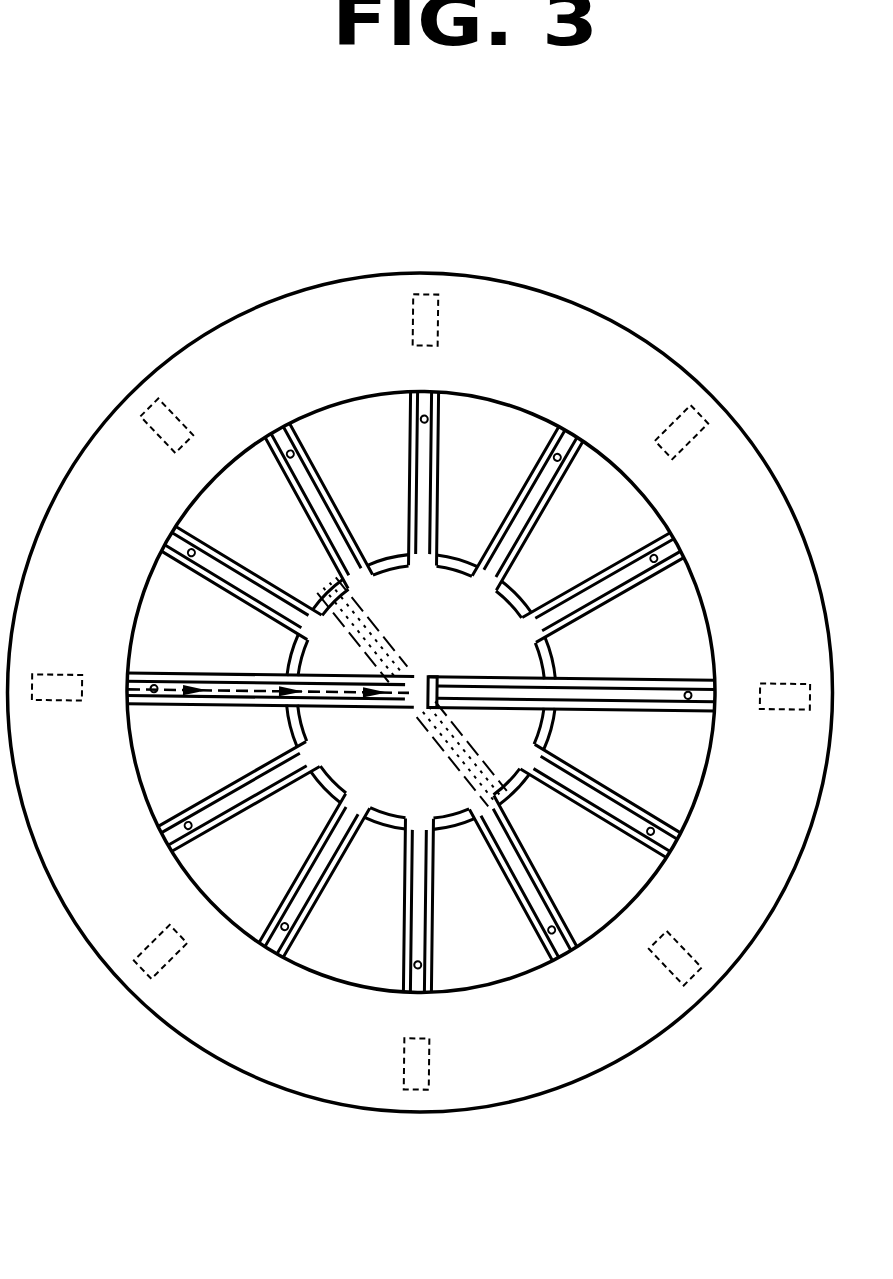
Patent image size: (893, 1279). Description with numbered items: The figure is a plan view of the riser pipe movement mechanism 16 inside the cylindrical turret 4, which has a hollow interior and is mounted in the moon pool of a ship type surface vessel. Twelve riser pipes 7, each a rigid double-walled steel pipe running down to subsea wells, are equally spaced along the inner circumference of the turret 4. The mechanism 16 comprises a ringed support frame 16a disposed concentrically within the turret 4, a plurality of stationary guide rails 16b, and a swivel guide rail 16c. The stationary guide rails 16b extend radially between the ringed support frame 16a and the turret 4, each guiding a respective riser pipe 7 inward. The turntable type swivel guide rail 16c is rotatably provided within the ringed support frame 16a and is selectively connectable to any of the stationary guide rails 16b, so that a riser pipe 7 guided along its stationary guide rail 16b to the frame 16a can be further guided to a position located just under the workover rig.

The cylindrical turret 4 is at (300, 1075).
The riser pipe 7 is at (432, 424).
The riser pipe movement mechanism 16 is at (339, 497).
The ringed support frame 16a is at (578, 653).
The stationary guide rail 16b is at (679, 668).
The swivel guide rail 16c is at (333, 708).